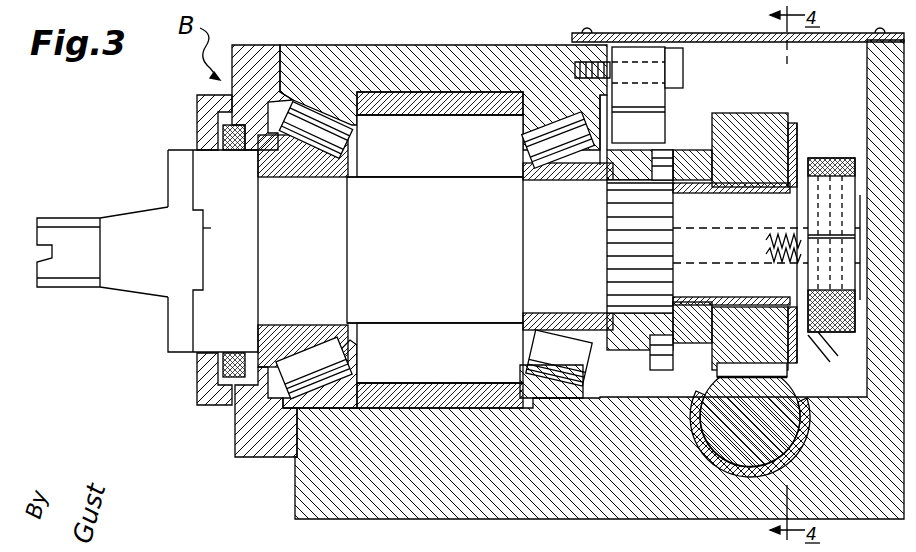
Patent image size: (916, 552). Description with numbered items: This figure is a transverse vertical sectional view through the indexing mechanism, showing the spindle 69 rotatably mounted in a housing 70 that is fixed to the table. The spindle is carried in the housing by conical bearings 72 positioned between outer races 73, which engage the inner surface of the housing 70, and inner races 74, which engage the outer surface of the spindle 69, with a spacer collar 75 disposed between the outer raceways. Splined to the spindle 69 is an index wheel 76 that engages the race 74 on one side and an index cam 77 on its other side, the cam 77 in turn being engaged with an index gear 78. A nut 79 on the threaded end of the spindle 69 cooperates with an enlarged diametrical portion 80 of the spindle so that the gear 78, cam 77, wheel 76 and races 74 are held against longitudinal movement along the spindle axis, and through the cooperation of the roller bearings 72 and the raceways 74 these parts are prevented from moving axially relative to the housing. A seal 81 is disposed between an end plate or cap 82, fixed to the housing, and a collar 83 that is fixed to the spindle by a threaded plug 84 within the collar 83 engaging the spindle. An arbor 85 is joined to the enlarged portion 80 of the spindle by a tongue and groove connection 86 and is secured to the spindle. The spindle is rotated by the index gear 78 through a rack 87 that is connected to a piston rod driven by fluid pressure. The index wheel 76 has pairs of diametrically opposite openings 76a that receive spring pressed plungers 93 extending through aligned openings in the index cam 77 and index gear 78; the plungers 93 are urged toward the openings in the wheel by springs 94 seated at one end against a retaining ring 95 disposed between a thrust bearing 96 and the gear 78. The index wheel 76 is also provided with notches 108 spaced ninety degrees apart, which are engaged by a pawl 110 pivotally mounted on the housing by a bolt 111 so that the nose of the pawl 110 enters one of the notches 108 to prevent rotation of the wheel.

The spindle 69 is at (452, 222).
The housing 70 is at (520, 505).
The conical bearings 72 is at (345, 143).
The outer races 73 is at (357, 110).
The inner races 74 is at (312, 172).
The spacer collar 75 is at (446, 390).
The index wheel 76 is at (620, 368).
The openings 76a is at (676, 143).
The index cam 77 is at (695, 353).
The index gear 78 is at (788, 114).
The nut 79 is at (840, 333).
The enlarged diametrical portion 80 is at (200, 175).
The seal 81 is at (235, 366).
The end plate or cap 82 is at (273, 455).
The collar 83 is at (214, 405).
The threaded plug 84 is at (223, 135).
The arbor 85 is at (99, 212).
The tongue and groove connection 86 is at (205, 230).
The rack 87 is at (762, 428).
The spring pressed plungers 93 is at (718, 234).
The springs 94 is at (766, 246).
The retaining ring 95 is at (798, 138).
The thrust bearing 96 is at (816, 352).
The notches 108 is at (672, 115).
The pawl 110 is at (640, 50).
The bolt 111 is at (683, 58).